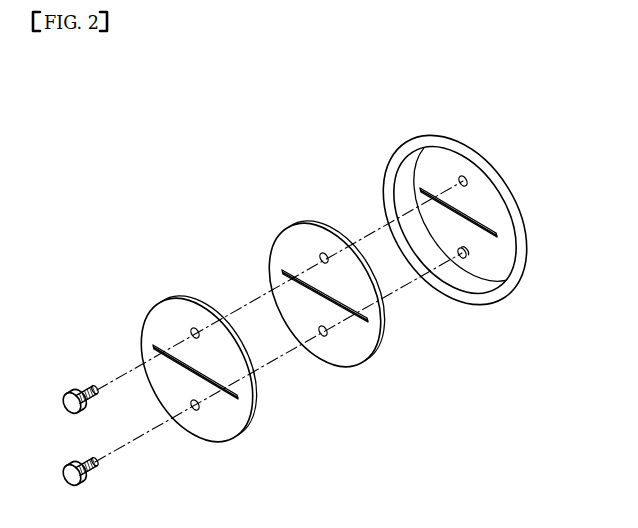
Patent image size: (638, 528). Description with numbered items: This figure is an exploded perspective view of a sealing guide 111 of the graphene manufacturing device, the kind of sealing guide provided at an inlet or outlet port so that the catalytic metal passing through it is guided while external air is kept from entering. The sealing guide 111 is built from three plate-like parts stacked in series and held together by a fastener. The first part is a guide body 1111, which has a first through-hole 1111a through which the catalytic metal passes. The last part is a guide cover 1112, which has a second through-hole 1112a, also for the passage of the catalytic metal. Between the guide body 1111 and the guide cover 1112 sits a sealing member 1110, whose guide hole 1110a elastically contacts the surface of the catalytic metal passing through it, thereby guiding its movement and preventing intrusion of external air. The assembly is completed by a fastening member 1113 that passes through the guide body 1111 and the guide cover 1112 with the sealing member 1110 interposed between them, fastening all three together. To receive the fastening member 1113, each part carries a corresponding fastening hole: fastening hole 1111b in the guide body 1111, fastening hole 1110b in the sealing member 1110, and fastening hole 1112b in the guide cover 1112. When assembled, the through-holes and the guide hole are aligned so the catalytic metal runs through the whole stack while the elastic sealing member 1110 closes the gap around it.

The sealing guide 111 is at (183, 113).
The sealing member 1110 is at (293, 223).
The guide hole 1110a is at (362, 322).
The fastening hole 1110b is at (323, 338).
The guide body 1111 is at (443, 137).
The first through-hole 1111a is at (495, 236).
The fastening hole 1111b is at (461, 258).
The guide cover 1112 is at (172, 297).
The second through-hole 1112a is at (236, 398).
The fastening hole 1112b is at (195, 412).
The fastening member 1113 is at (67, 391).